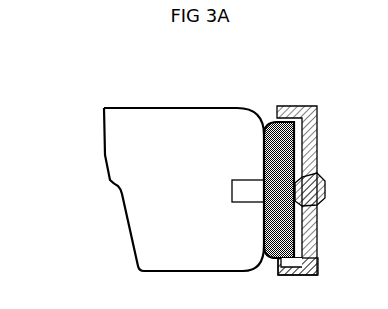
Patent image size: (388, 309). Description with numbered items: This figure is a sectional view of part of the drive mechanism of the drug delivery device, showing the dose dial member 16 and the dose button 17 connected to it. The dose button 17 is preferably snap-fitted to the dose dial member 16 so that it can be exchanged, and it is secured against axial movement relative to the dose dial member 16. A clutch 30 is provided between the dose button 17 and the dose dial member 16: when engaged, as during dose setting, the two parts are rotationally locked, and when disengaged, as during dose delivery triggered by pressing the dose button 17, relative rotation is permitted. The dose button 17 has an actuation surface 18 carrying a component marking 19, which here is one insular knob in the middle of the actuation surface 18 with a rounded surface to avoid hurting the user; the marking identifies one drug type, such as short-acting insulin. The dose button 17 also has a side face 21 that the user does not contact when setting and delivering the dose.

The dose dial member 16 is at (147, 148).
The clutch 30 is at (272, 122).
The dose button 17 is at (317, 97).
The actuation surface 18 is at (318, 250).
The component marking 19 is at (324, 185).
The side face 21 is at (285, 274).